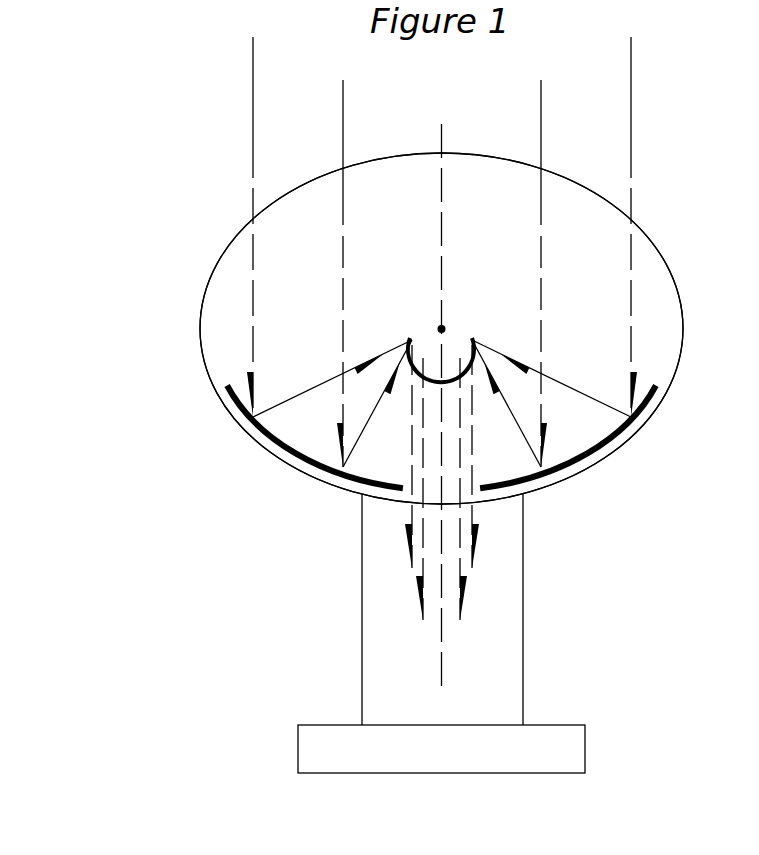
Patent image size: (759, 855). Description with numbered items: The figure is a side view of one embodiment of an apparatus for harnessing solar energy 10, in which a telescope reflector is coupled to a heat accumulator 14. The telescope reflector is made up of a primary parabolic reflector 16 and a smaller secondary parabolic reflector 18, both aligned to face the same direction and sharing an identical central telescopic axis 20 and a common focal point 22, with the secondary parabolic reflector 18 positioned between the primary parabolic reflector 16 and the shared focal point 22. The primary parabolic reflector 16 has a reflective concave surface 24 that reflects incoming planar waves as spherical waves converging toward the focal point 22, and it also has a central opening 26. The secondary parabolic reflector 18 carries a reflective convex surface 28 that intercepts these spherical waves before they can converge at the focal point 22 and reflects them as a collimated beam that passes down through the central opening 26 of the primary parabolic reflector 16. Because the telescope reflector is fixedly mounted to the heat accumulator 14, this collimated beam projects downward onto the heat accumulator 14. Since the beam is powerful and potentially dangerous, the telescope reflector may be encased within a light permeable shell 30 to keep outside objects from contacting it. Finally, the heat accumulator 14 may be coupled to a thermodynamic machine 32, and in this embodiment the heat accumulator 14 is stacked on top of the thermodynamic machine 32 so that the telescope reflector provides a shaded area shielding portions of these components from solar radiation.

The apparatus for harnessing solar energy 10 is at (415, 405).
The heat accumulator 14 is at (496, 609).
The primary parabolic reflector 16 is at (458, 332).
The secondary parabolic reflector 18 is at (416, 325).
The central telescopic axis 20 is at (442, 364).
The focal point 22 is at (480, 297).
The reflective concave surface 24 is at (441, 419).
The central opening 26 is at (381, 482).
The reflective convex surface 28 is at (442, 396).
The light permeable shell 30 is at (477, 328).
The thermodynamic machine 32 is at (499, 734).